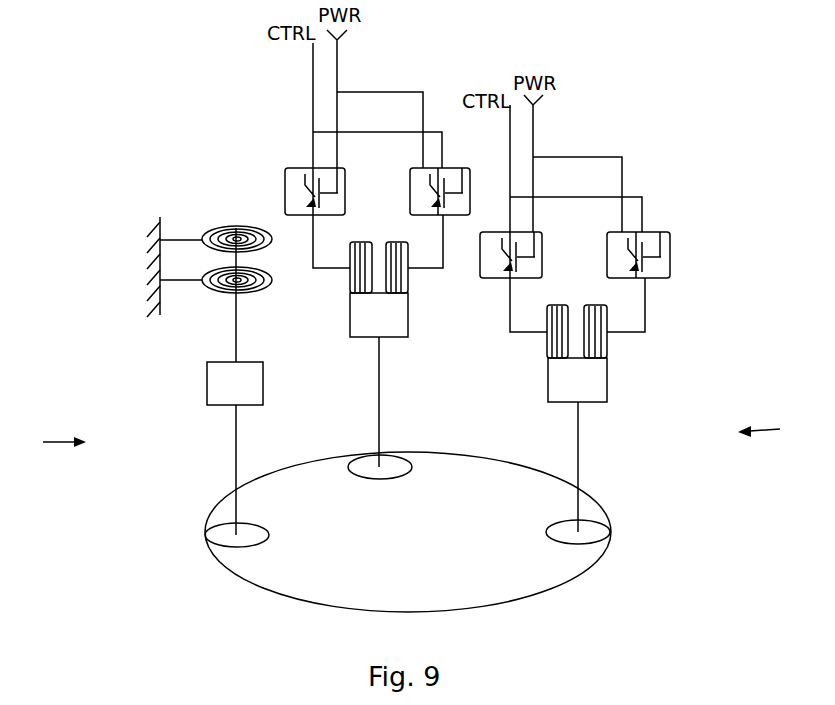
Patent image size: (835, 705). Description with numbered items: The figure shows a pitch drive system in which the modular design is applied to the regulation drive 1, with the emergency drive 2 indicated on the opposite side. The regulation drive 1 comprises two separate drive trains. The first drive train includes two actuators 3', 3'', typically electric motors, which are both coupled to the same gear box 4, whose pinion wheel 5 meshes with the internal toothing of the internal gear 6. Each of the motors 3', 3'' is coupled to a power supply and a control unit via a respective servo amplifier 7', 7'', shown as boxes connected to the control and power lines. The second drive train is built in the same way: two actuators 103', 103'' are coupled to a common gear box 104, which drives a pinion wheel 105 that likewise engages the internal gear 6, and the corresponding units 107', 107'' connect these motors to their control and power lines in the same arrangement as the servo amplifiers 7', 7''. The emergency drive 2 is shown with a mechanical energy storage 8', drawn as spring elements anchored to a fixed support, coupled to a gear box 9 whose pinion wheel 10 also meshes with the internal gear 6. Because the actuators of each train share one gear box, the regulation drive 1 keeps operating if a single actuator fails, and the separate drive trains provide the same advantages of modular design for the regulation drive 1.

The regulation drive 1 is at (767, 428).
The emergency drive 2 is at (56, 441).
The first actuator 3' is at (630, 331).
The second actuator 3'' is at (521, 331).
The gear box 4 is at (607, 390).
The pinion wheel 5 is at (610, 522).
The internal gear 6 is at (565, 585).
The servo amplifier 7' is at (675, 253).
The servo amplifier 7'' is at (498, 270).
The mechanical energy storage 8' is at (220, 289).
The gear box 9 is at (208, 387).
The pinion wheel 10 is at (207, 527).
The actuator 103' is at (417, 289).
The actuator 103'' is at (337, 274).
The gear box 104 is at (405, 337).
The pinion wheel 105 is at (380, 480).
The first power electronics unit 107' is at (419, 179).
The second power electronics unit 107'' is at (297, 172).